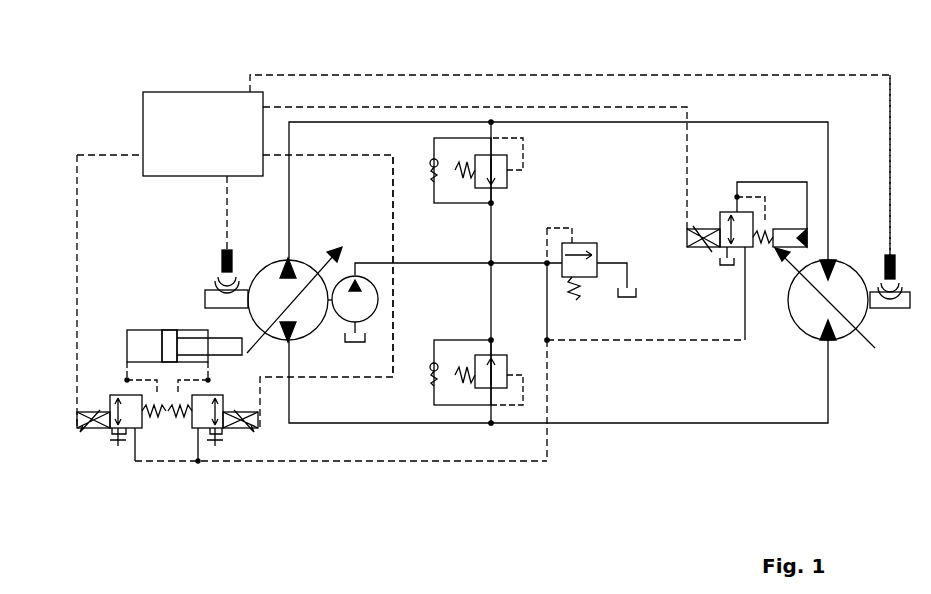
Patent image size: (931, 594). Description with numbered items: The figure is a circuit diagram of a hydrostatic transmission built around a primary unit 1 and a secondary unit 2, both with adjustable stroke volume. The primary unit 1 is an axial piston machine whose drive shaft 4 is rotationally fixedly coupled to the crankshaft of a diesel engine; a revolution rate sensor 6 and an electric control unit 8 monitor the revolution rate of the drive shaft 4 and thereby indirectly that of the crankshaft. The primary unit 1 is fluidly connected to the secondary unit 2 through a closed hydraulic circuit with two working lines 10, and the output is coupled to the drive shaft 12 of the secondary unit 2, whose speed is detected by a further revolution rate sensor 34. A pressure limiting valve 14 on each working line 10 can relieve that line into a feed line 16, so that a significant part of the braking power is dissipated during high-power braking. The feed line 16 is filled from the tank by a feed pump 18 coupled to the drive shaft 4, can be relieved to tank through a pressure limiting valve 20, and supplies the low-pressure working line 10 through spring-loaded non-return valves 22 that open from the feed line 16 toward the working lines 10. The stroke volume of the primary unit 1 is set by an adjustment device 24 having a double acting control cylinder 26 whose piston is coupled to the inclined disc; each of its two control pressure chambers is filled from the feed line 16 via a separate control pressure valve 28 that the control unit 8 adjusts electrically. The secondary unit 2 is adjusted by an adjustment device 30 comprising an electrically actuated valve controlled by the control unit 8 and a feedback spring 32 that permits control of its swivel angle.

The primary unit 1 is at (262, 280).
The secondary unit 2 is at (808, 312).
The drive shaft 4 is at (205, 298).
The revolution rate sensor 6 is at (218, 258).
The control unit 8 is at (210, 147).
The working lines 10 is at (733, 121).
The drive shaft 12 is at (888, 310).
The pressure limiting valve 14 is at (529, 180).
The feed line 16 is at (440, 262).
The feed pump 18 is at (378, 299).
The pressure limiting valve 20 is at (608, 235).
The non-return valve 22 is at (428, 163).
The adjustment device 24 is at (175, 325).
The control cylinder 26 is at (148, 330).
The control pressure valve 28 is at (118, 458).
The adjustment device 30 is at (785, 146).
The feedback spring 32 is at (770, 222).
The revolution rate sensor 34 is at (880, 272).